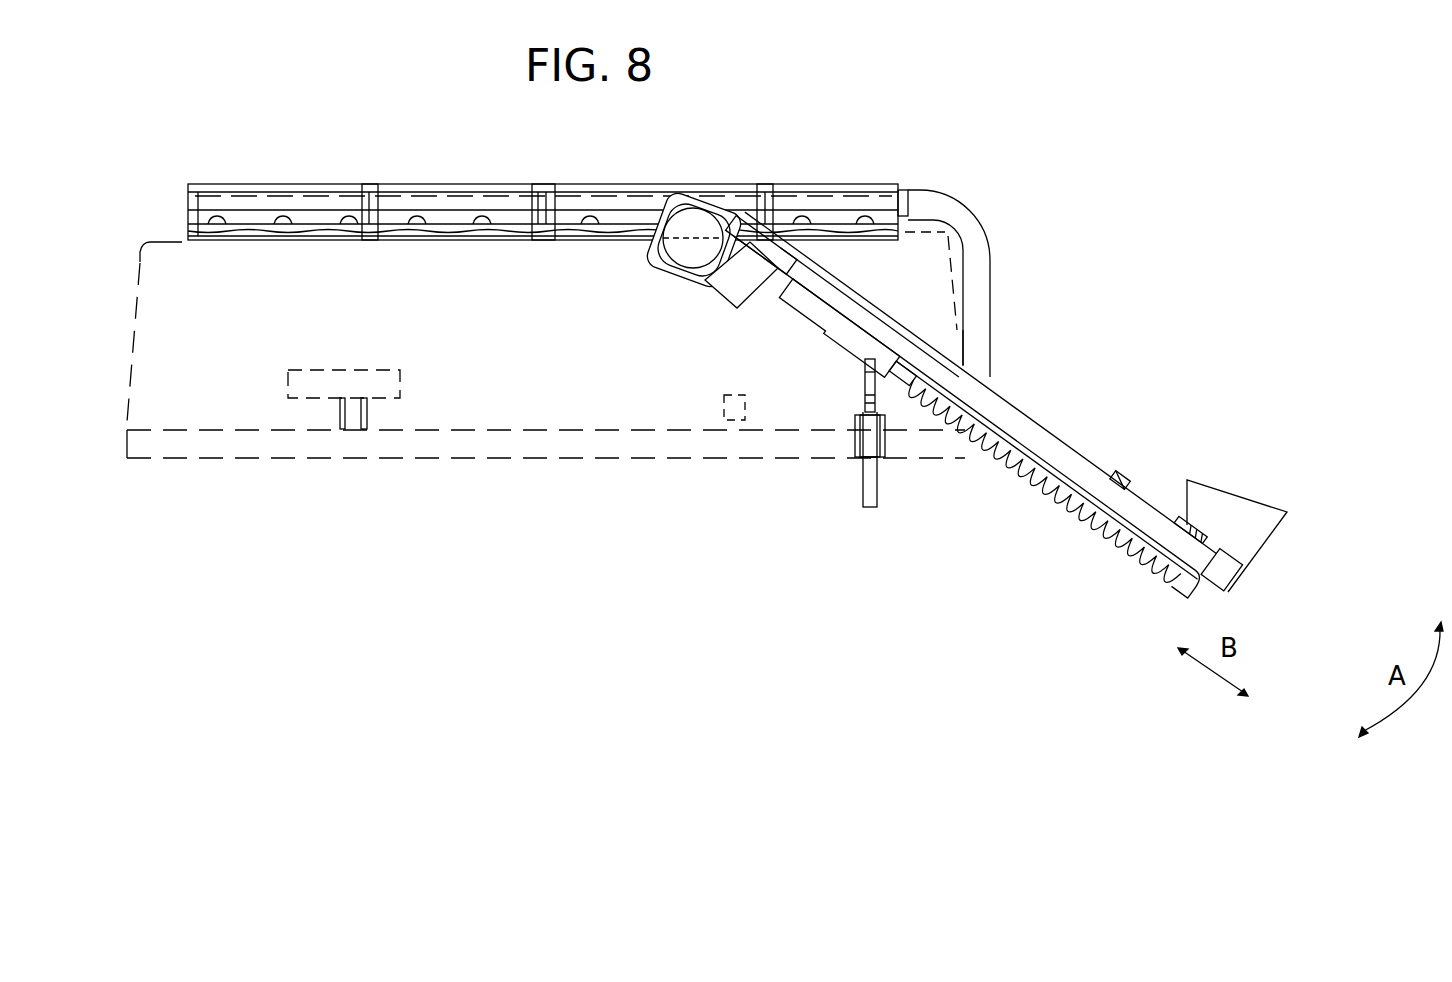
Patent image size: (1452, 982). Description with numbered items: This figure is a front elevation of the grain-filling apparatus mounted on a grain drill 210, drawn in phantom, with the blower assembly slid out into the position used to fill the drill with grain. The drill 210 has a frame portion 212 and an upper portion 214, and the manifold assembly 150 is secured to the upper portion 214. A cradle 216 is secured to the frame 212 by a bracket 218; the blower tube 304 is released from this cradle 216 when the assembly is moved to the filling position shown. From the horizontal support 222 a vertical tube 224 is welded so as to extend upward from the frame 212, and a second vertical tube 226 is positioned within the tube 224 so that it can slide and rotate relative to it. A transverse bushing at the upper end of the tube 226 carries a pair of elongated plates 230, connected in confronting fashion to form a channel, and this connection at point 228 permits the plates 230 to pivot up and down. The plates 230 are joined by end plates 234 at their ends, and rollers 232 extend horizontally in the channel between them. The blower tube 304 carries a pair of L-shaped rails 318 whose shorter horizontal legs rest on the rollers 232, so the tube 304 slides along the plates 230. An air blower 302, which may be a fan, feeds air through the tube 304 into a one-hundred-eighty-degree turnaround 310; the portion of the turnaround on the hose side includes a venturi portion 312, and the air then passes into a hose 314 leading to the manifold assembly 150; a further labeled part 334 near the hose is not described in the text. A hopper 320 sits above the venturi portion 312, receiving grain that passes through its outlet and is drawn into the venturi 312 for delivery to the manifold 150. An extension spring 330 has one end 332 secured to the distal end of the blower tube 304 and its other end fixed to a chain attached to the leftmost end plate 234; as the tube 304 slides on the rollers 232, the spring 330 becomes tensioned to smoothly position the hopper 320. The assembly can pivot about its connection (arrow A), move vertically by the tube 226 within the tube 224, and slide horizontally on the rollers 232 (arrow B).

The manifold assembly 150 is at (356, 182).
The grain drill 210 is at (127, 264).
The frame portion 212 is at (217, 440).
The upper portion 214 is at (150, 240).
The cradle 216 is at (383, 374).
The bracket 218 is at (353, 420).
The shaft 222 is at (860, 452).
The vertical tube 224 is at (876, 490).
The second vertical tube 226 is at (856, 432).
The connection point 228 is at (864, 372).
The elongated plates 230 is at (806, 300).
The rollers 232 is at (880, 335).
The end plates 234 is at (796, 245).
The air blower 302 is at (690, 278).
The blower tube 304 is at (1048, 448).
The 180° turnaround 310 is at (1240, 566).
The venturi portion 312 is at (1214, 541).
The hose 314 is at (967, 232).
The L-shaped rails 318 is at (1043, 510).
The hopper 320 is at (1255, 512).
The extension spring 330 is at (1085, 520).
The end of extension spring 332 is at (823, 300).
The pipe end 334 is at (962, 366).